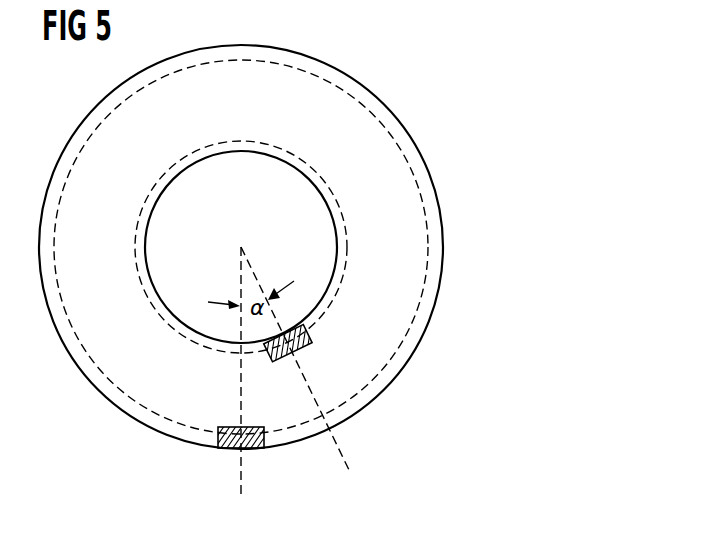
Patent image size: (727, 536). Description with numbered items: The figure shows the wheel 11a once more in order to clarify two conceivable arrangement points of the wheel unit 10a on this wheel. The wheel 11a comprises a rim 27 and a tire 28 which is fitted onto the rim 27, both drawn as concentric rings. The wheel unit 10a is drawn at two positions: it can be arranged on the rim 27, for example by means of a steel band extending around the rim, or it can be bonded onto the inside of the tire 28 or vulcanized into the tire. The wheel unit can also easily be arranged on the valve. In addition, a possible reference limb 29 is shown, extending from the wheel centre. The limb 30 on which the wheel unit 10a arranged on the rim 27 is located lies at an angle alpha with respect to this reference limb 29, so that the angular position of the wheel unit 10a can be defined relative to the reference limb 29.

The wheel 11a is at (422, 63).
The rim 27 is at (222, 166).
The tire 28 is at (412, 244).
The reference limb 29 is at (238, 482).
The limb 30 is at (346, 463).
The wheel unit 10a is at (313, 341).